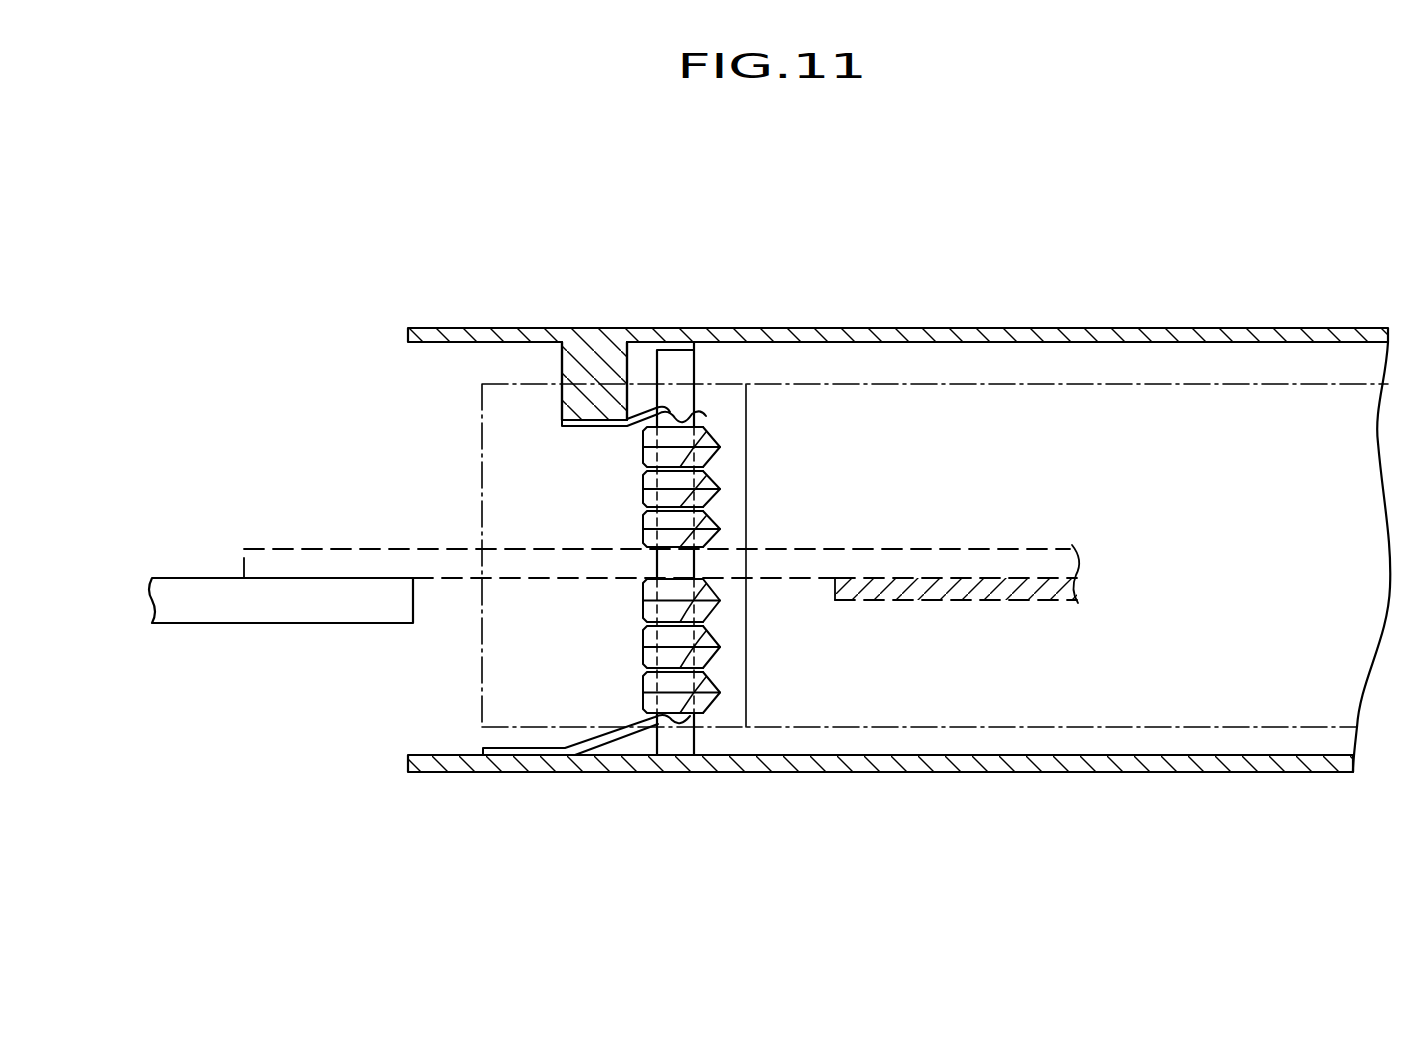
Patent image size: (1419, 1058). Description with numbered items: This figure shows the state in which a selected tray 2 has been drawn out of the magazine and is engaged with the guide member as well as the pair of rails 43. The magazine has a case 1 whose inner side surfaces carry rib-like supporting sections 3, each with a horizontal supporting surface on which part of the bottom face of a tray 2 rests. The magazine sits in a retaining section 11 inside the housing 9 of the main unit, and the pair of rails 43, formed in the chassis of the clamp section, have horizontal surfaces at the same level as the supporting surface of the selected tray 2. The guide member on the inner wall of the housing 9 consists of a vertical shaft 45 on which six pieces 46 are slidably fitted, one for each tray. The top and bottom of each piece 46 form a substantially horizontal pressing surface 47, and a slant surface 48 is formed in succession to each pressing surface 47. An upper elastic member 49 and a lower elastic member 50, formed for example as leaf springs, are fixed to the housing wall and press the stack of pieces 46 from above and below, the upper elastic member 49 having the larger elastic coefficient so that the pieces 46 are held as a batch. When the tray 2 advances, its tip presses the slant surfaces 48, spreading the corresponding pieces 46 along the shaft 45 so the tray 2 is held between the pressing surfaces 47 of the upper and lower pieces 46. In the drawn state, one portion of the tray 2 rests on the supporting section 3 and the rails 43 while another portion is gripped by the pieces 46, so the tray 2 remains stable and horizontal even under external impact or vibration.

The case 1 is at (1105, 385).
The tray 2 is at (970, 549).
The supporting section 3 is at (945, 598).
The housing 9 is at (1000, 336).
The retaining section 11 is at (1228, 356).
The rails 43 is at (325, 615).
The shaft 45 is at (705, 346).
The piece 46 is at (642, 439).
The pressing surface 47 is at (720, 440).
The slant surface 48 is at (695, 457).
The upper elastic member 49 is at (647, 416).
The lower elastic member 50 is at (612, 738).